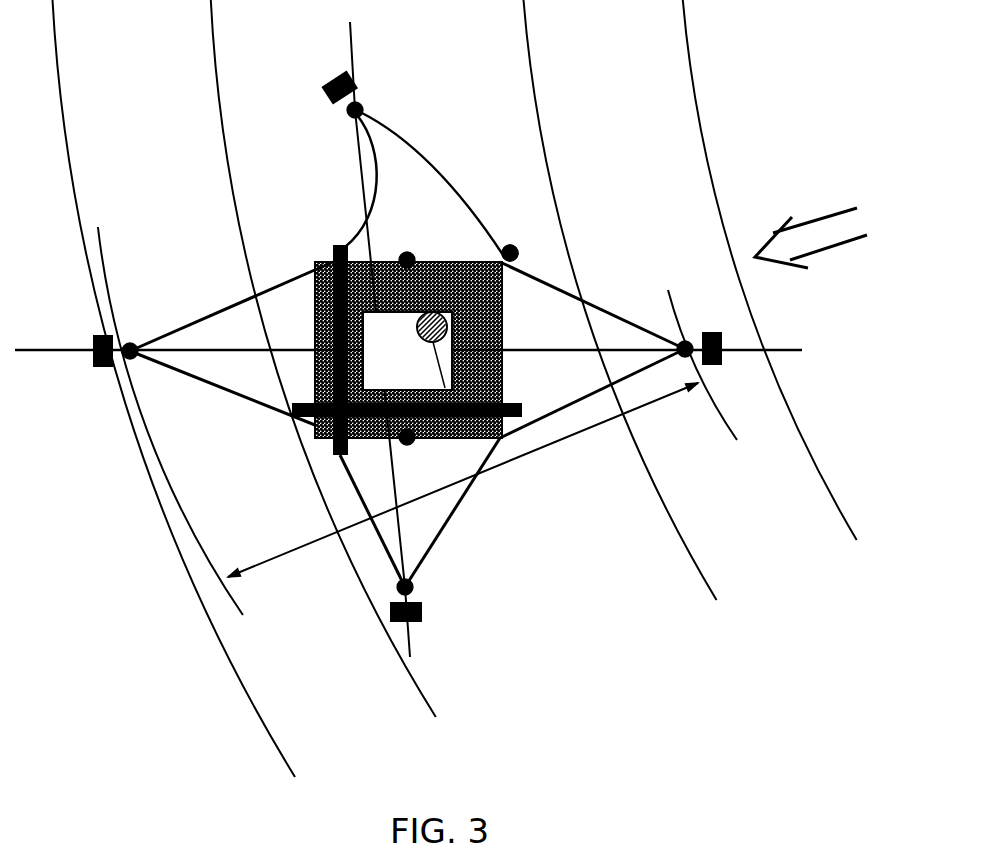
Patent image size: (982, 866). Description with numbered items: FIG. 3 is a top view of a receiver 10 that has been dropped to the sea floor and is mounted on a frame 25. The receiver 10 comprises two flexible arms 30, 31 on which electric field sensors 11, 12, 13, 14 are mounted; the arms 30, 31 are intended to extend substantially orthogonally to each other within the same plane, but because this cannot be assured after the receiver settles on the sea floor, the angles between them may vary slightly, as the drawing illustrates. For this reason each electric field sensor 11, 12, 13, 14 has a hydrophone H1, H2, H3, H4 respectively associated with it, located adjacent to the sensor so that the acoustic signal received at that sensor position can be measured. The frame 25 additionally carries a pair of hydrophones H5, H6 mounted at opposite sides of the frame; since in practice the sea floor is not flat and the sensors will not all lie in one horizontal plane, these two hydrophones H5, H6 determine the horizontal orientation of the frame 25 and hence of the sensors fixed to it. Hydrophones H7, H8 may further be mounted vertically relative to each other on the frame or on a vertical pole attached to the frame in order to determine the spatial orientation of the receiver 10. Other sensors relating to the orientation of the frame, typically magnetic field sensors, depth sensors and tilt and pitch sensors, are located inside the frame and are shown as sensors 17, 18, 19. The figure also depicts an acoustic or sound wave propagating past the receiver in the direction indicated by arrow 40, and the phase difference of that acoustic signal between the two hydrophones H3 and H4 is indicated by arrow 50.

The receiver 10 is at (450, 328).
The electric field sensor 11 is at (323, 86).
The electric field sensor 12 is at (388, 610).
The electric field sensor 13 is at (92, 372).
The electric field sensor 14 is at (718, 365).
The orientation sensor 17 is at (333, 248).
The orientation sensor 18 is at (373, 388).
The orientation sensor 19 is at (310, 423).
The frame 25 is at (487, 363).
The flexible arm 30 is at (362, 230).
The flexible arm 31 is at (208, 314).
The arrow 40 is at (825, 218).
The arrow 50 is at (553, 447).
The hydrophone H1 is at (335, 120).
The hydrophone H2 is at (429, 603).
The hydrophone H3 is at (99, 340).
The hydrophone H4 is at (699, 332).
The hydrophone H5 is at (423, 248).
The hydrophone H6 is at (417, 453).
The hydrophone H7 is at (515, 211).
The hydrophone H8 is at (515, 240).